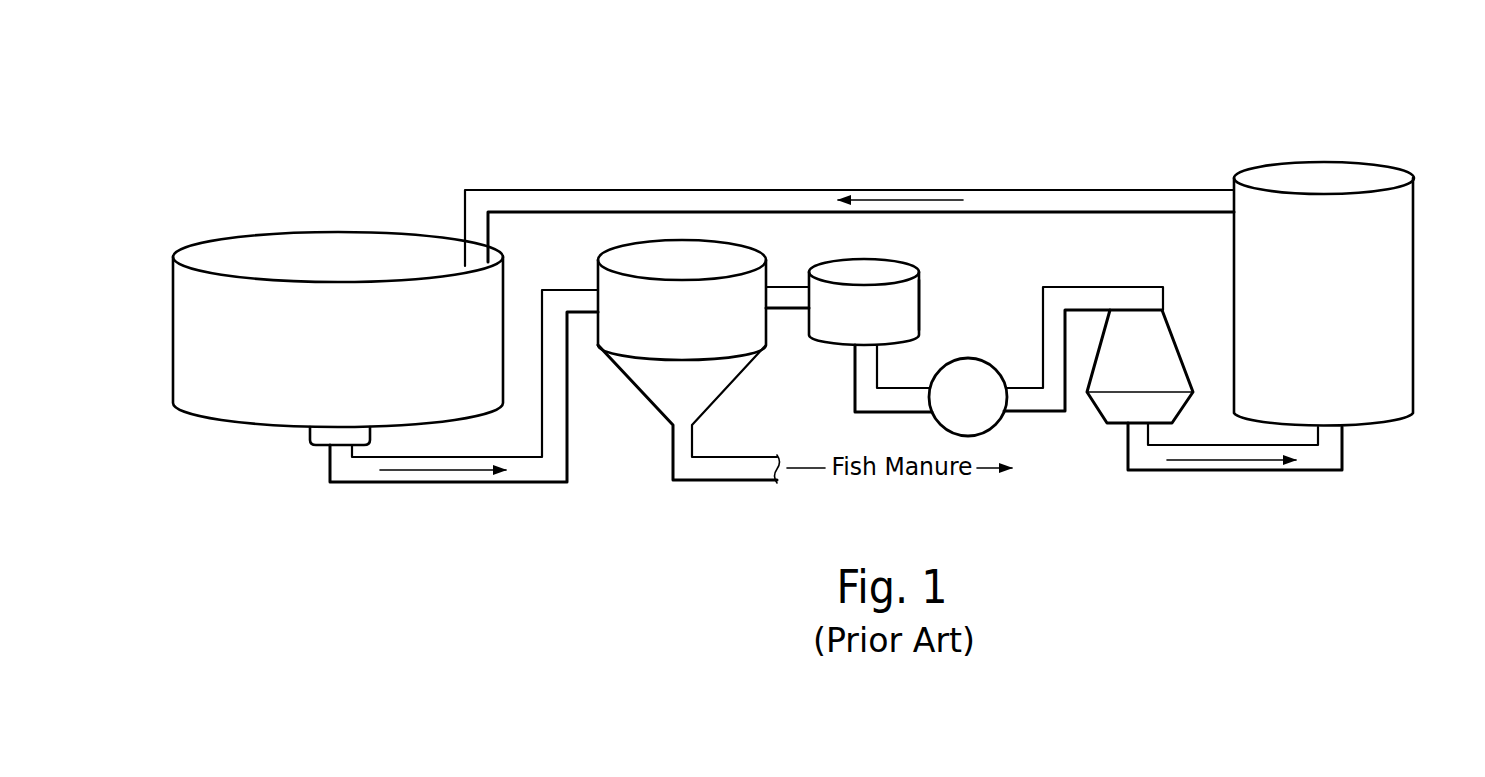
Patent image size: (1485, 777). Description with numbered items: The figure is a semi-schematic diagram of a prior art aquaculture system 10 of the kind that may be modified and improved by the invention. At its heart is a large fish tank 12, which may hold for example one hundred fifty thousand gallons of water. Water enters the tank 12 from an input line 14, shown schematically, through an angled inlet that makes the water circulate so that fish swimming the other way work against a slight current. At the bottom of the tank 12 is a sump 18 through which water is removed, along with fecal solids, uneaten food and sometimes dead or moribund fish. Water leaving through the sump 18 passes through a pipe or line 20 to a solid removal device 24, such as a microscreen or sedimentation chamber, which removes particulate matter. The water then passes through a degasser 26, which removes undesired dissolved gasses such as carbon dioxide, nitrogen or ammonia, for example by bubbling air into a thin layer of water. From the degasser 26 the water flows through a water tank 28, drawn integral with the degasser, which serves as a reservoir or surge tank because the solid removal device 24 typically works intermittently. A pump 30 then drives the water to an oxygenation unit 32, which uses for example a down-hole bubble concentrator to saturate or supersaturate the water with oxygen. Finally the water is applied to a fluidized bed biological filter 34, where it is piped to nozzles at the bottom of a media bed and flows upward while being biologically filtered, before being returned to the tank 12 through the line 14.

The prior art aquaculture system 10 is at (648, 118).
The fish tank 12 is at (327, 216).
The input line 14 is at (450, 219).
The sump 18 is at (296, 446).
The pipe or line 20 is at (446, 505).
The solid removal device 24 is at (603, 242).
The degasser 26 is at (891, 252).
The water tank 28 is at (931, 289).
The pump 30 is at (934, 430).
The oxygenation unit 32 is at (1099, 438).
The fluidized bed biological filter 34 is at (1418, 247).